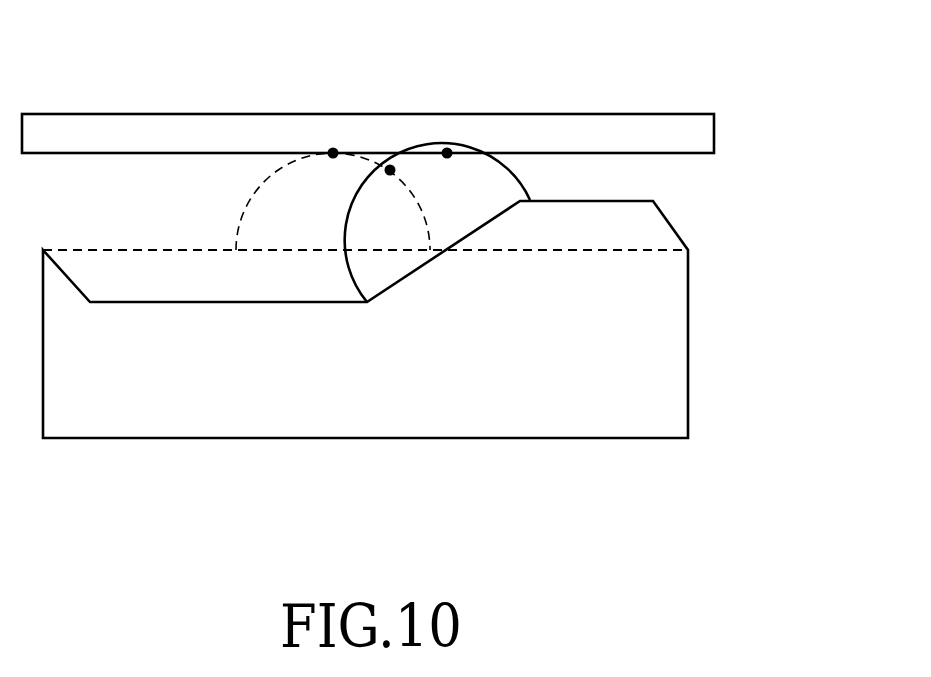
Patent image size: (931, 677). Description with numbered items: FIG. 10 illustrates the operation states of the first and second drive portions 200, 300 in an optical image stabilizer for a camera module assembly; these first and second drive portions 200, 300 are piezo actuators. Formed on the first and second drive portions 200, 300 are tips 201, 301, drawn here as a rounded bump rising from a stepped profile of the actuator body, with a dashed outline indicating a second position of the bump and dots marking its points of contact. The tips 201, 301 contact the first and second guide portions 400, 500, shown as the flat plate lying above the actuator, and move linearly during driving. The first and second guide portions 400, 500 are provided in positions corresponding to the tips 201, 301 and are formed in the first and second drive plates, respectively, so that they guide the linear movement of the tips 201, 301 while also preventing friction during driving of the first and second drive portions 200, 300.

The first drive portion 200 is at (440, 319).
The second drive portion 300 is at (662, 357).
The tip 201 is at (383, 157).
The tip 301 is at (483, 173).
The first guide portion 400 is at (368, 76).
The second guide portion 500 is at (210, 125).